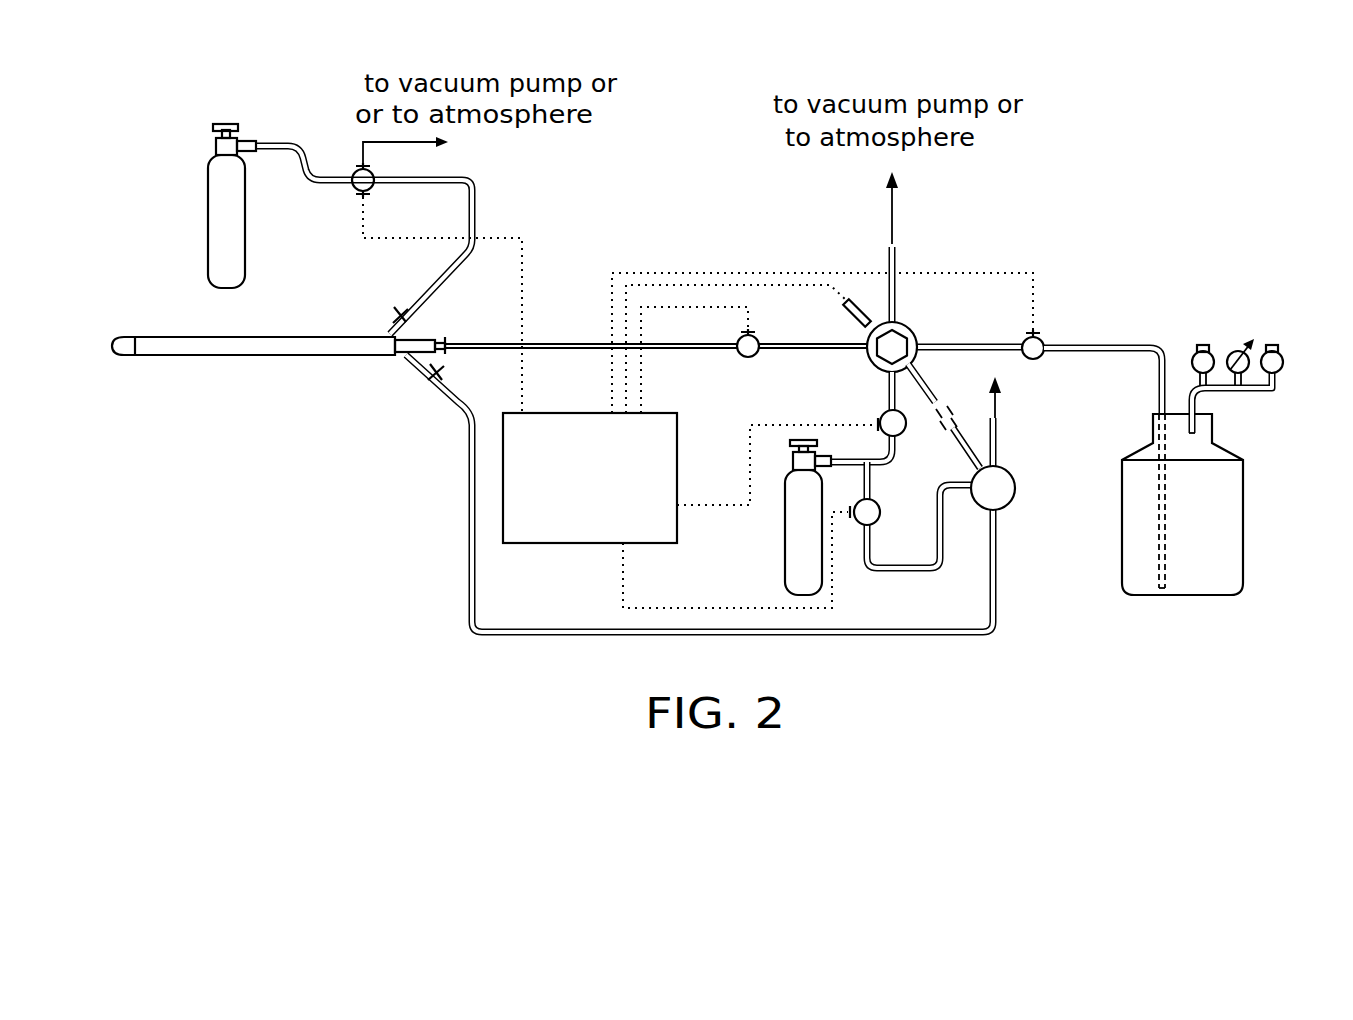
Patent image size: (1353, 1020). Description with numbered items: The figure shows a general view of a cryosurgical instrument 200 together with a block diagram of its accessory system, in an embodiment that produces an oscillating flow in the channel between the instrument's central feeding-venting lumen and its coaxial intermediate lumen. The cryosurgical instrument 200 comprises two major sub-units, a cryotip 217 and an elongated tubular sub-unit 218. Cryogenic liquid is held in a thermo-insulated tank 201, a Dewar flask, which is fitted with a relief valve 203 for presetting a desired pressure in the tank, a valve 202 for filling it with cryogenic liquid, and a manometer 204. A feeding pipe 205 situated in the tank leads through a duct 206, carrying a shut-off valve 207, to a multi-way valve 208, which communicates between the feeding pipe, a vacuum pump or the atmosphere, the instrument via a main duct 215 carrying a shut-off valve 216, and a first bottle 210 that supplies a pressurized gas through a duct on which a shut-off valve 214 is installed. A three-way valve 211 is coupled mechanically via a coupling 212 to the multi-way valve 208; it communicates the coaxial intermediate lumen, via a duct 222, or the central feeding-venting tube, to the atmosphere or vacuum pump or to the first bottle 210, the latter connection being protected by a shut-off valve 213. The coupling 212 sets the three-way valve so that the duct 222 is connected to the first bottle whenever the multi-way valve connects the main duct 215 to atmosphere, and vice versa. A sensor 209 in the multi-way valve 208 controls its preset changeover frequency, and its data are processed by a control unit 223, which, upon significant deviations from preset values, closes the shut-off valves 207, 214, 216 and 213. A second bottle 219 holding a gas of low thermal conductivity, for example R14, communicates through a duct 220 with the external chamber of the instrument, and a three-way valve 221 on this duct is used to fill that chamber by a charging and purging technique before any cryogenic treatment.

The cryosurgical instrument 200 is at (330, 334).
The thermo-insulated tank 201 is at (1243, 546).
The valve 202 is at (1285, 367).
The relief valve 203 is at (1192, 356).
The manometer 204 is at (1221, 349).
The feeding pipe 205 is at (1160, 566).
The duct 206 is at (1156, 366).
The shut-off valve 207 is at (1045, 340).
The multi-way valve 208 is at (920, 338).
The sensor 209 is at (855, 322).
The first bottle 210 is at (786, 572).
The three-way valve 211 is at (1015, 486).
The coupling 212 is at (953, 430).
The shut-off valve 213 is at (880, 514).
The shut-off valve 214 is at (883, 412).
The main duct 215 is at (592, 344).
The shut-off valve 216 is at (750, 360).
The cryotip 217 is at (116, 353).
The elongated tubular sub-unit 218 is at (262, 353).
The second bottle 219 is at (208, 247).
The duct 220 is at (467, 264).
The three-way valve 221 is at (355, 190).
The duct 222 is at (466, 574).
The control unit 223 is at (562, 545).